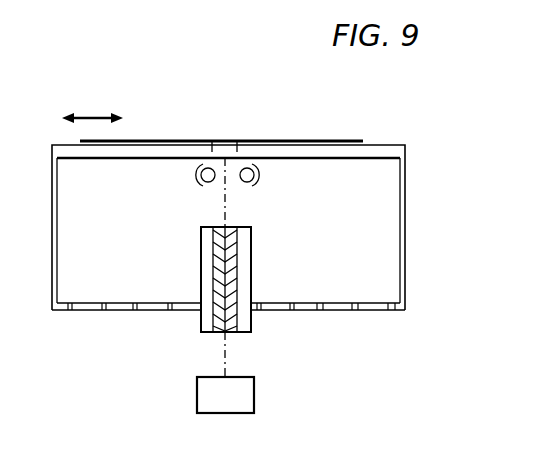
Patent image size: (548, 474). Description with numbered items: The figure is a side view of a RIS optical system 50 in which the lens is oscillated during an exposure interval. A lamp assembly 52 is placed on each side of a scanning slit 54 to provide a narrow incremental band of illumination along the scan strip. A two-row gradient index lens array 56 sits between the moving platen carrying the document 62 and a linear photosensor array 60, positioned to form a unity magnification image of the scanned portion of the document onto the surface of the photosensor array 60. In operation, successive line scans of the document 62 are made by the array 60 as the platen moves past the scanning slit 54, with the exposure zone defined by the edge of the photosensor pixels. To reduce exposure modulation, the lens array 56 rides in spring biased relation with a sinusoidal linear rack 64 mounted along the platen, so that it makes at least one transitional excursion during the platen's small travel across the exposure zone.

The RIS optical system 50 is at (331, 320).
The lamp assembly 52 is at (190, 180).
The scanning slit 54 is at (218, 140).
The two-row gradient index lens array 56 is at (242, 268).
The linear photosensor array 60 is at (242, 376).
The document 62 is at (337, 140).
The sinusoidal linear rack 64 is at (405, 217).